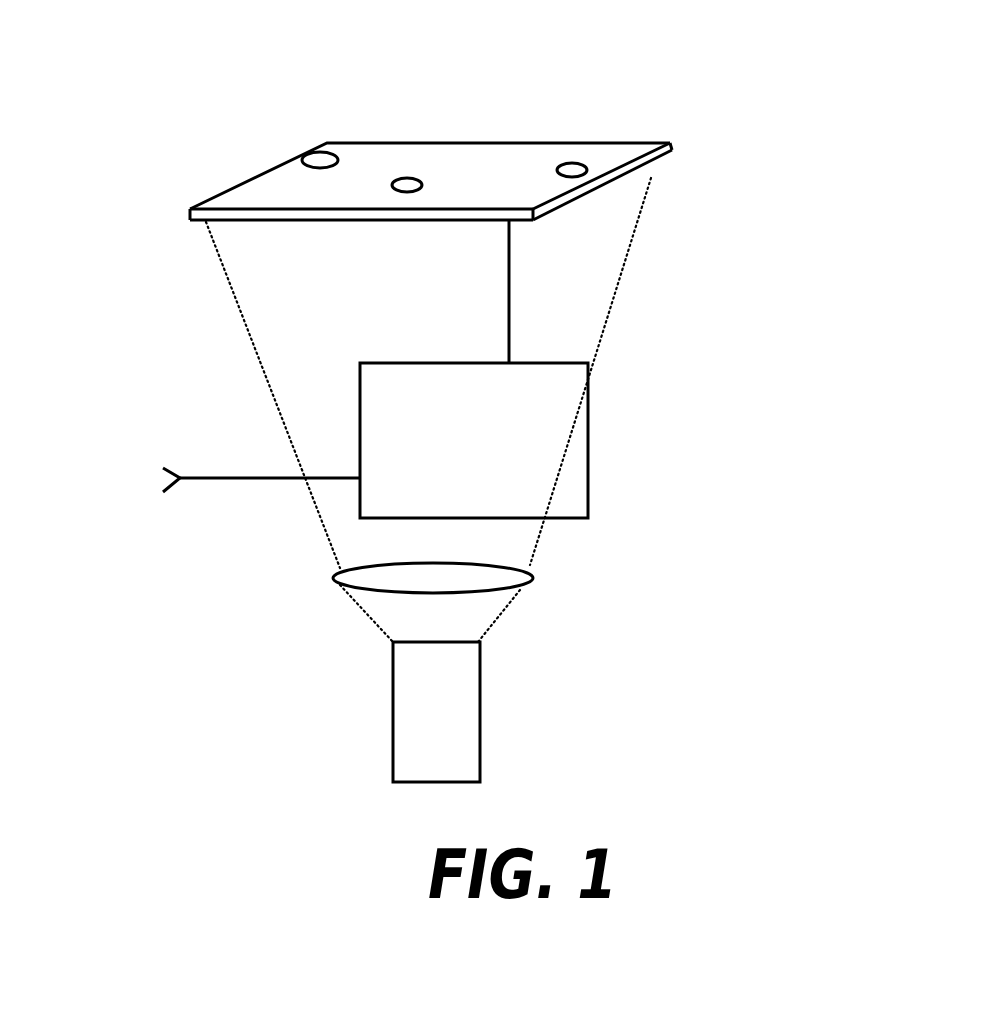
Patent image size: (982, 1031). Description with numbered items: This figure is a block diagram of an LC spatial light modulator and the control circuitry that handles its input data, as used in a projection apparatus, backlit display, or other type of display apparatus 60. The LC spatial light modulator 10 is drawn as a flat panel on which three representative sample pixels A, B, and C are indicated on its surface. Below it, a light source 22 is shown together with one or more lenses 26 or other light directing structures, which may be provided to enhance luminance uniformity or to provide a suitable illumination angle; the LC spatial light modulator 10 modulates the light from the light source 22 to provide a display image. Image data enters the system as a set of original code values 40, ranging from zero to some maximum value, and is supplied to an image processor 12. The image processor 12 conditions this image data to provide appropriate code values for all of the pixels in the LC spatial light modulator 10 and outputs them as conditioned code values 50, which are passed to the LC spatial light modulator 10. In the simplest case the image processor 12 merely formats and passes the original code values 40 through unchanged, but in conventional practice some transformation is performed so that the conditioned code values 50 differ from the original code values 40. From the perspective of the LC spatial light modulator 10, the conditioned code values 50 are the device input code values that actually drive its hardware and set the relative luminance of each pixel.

The LC spatial light modulator 10 is at (652, 163).
The image processor 12 is at (588, 468).
The light source 22 is at (393, 745).
The lens 26 is at (513, 588).
The original code values 40 is at (283, 480).
The conditioned code values 50 is at (509, 302).
The display apparatus 60 is at (860, 382).
The pixel A is at (313, 157).
The pixel B is at (410, 178).
The pixel C is at (578, 163).